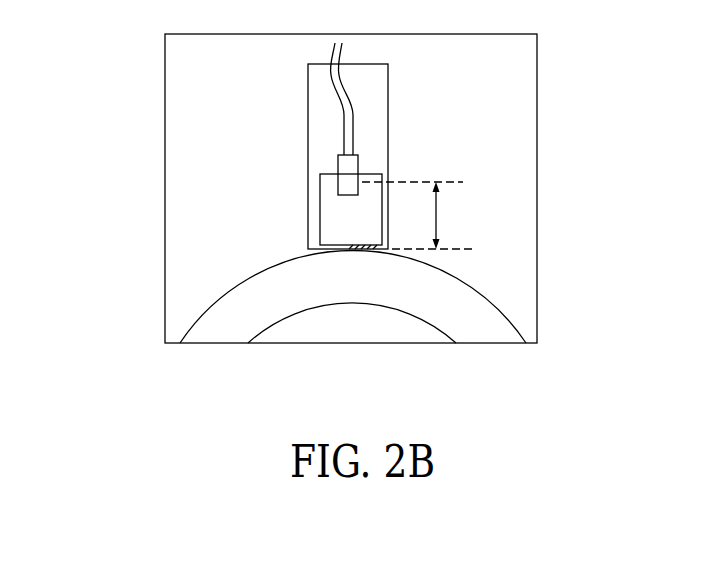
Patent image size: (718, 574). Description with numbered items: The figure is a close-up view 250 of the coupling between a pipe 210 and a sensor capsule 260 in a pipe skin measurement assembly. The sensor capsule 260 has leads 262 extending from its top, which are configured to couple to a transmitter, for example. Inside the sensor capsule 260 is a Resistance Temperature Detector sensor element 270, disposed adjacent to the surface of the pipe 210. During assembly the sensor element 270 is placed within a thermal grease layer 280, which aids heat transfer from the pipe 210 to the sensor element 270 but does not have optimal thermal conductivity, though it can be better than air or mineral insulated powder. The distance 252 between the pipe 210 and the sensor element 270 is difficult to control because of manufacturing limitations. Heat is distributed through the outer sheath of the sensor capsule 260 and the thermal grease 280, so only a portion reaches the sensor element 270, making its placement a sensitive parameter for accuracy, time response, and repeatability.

The close-up view 250 is at (583, 142).
The pipe 210 is at (237, 288).
The sensor capsule 260 is at (392, 130).
The leads 262 is at (330, 73).
The sensor element 270 is at (350, 167).
The thermal grease layer 280 is at (332, 229).
The distance 252 is at (437, 215).